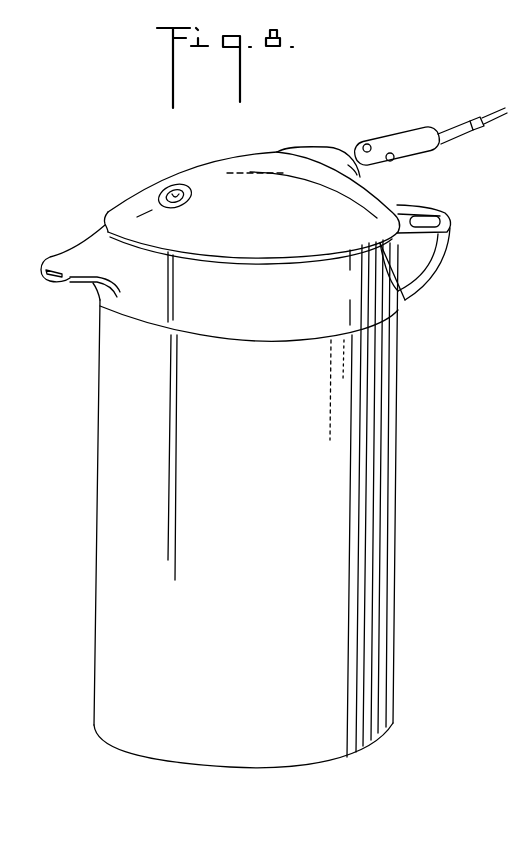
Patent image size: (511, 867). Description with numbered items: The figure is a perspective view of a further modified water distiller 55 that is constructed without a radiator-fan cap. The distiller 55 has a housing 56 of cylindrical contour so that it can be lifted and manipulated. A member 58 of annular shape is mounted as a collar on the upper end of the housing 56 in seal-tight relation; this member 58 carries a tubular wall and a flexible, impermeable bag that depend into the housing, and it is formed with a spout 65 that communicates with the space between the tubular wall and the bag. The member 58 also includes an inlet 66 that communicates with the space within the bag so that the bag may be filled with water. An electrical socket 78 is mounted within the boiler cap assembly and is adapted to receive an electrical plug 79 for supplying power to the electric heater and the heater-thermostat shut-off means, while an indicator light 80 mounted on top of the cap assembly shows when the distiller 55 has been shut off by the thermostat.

The distiller 55 is at (92, 548).
The housing 56 is at (383, 459).
The member 58 is at (143, 305).
The spout 65 is at (60, 253).
The inlet 66 is at (430, 218).
The electrical socket 78 is at (312, 150).
The electrical plug 79 is at (393, 138).
The indicator light 80 is at (172, 185).